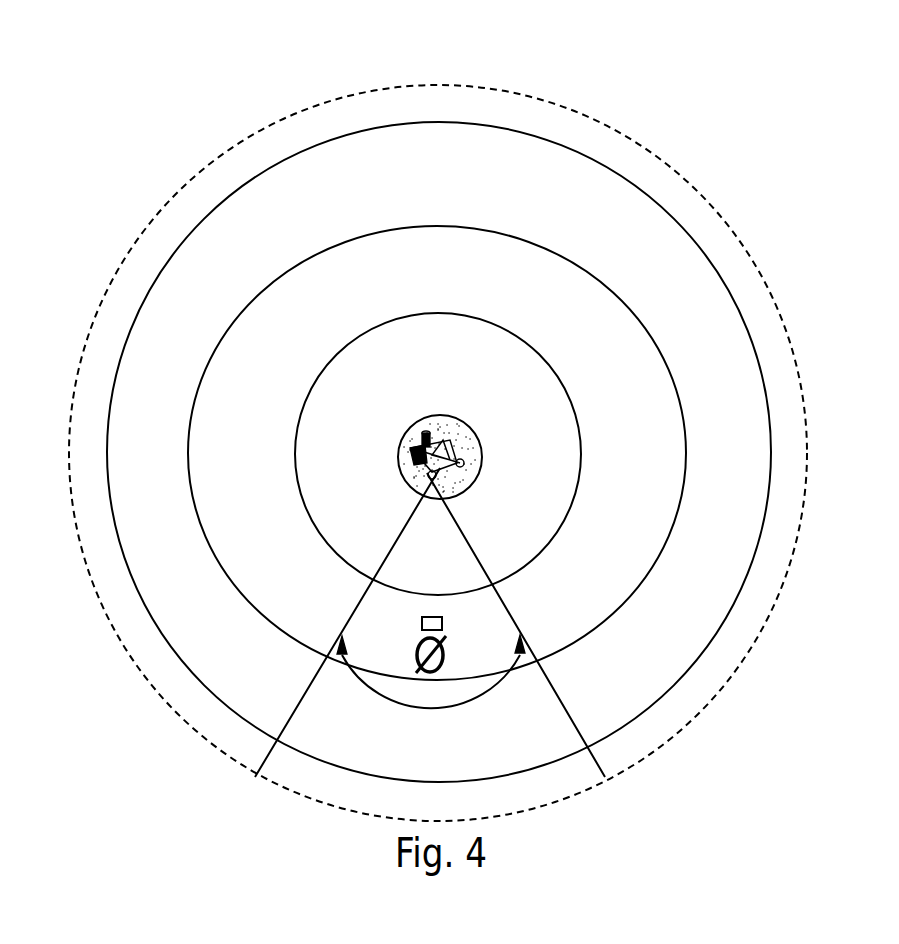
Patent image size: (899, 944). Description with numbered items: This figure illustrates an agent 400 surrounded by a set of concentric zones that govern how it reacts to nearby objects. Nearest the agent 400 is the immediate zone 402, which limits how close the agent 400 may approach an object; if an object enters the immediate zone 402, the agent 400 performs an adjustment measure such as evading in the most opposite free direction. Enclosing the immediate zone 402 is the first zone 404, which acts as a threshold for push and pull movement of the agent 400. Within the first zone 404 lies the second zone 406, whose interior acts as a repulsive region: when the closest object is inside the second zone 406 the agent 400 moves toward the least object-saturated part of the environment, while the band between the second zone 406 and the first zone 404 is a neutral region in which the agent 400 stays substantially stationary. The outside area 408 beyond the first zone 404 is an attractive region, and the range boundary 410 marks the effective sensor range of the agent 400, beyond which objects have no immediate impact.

The agent 400 is at (462, 461).
The immediate zone 402 is at (470, 440).
The first zone 404 is at (542, 275).
The second zone 406 is at (508, 373).
The outside area 408 is at (587, 187).
The range boundary 410 is at (588, 115).